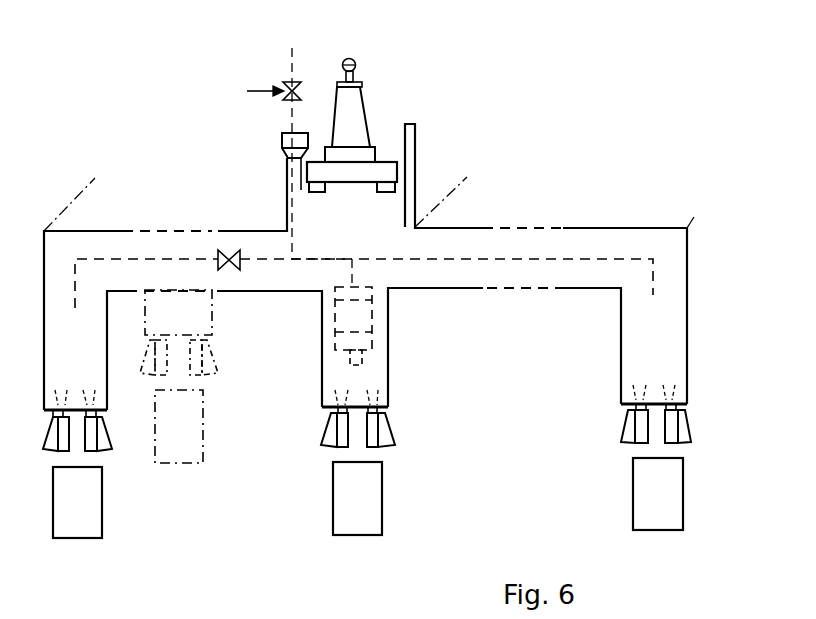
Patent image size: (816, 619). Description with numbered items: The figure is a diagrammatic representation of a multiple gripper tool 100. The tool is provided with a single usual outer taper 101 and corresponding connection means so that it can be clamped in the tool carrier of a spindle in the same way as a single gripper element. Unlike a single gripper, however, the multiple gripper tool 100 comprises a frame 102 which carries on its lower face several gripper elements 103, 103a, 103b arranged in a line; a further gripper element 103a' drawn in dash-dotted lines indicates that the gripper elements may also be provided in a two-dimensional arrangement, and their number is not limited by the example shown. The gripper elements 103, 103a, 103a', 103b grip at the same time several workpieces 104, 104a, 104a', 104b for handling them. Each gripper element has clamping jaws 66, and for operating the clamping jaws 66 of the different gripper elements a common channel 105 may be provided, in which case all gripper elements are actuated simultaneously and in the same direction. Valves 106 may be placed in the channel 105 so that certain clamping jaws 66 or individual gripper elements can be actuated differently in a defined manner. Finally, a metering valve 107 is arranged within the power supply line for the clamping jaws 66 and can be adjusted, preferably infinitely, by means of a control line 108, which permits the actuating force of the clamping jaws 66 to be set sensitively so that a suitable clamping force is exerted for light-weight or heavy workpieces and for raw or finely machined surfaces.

The multiple gripper tool 100 is at (508, 72).
The outer taper 101 is at (353, 107).
The frame 102 is at (468, 243).
The gripper element 103 is at (378, 365).
The gripper element 103a is at (96, 404).
The gripper element 103a' is at (210, 332).
The gripper element 103b is at (643, 347).
The workpiece 104 is at (353, 522).
The workpiece 104a is at (83, 524).
The workpiece 104a' is at (186, 446).
The workpiece 104b is at (653, 515).
The common channel 105 is at (287, 220).
The valve 106 is at (222, 255).
The metering valve 107 is at (300, 88).
The control line 108 is at (263, 88).
The clamping jaws 66 is at (330, 432).